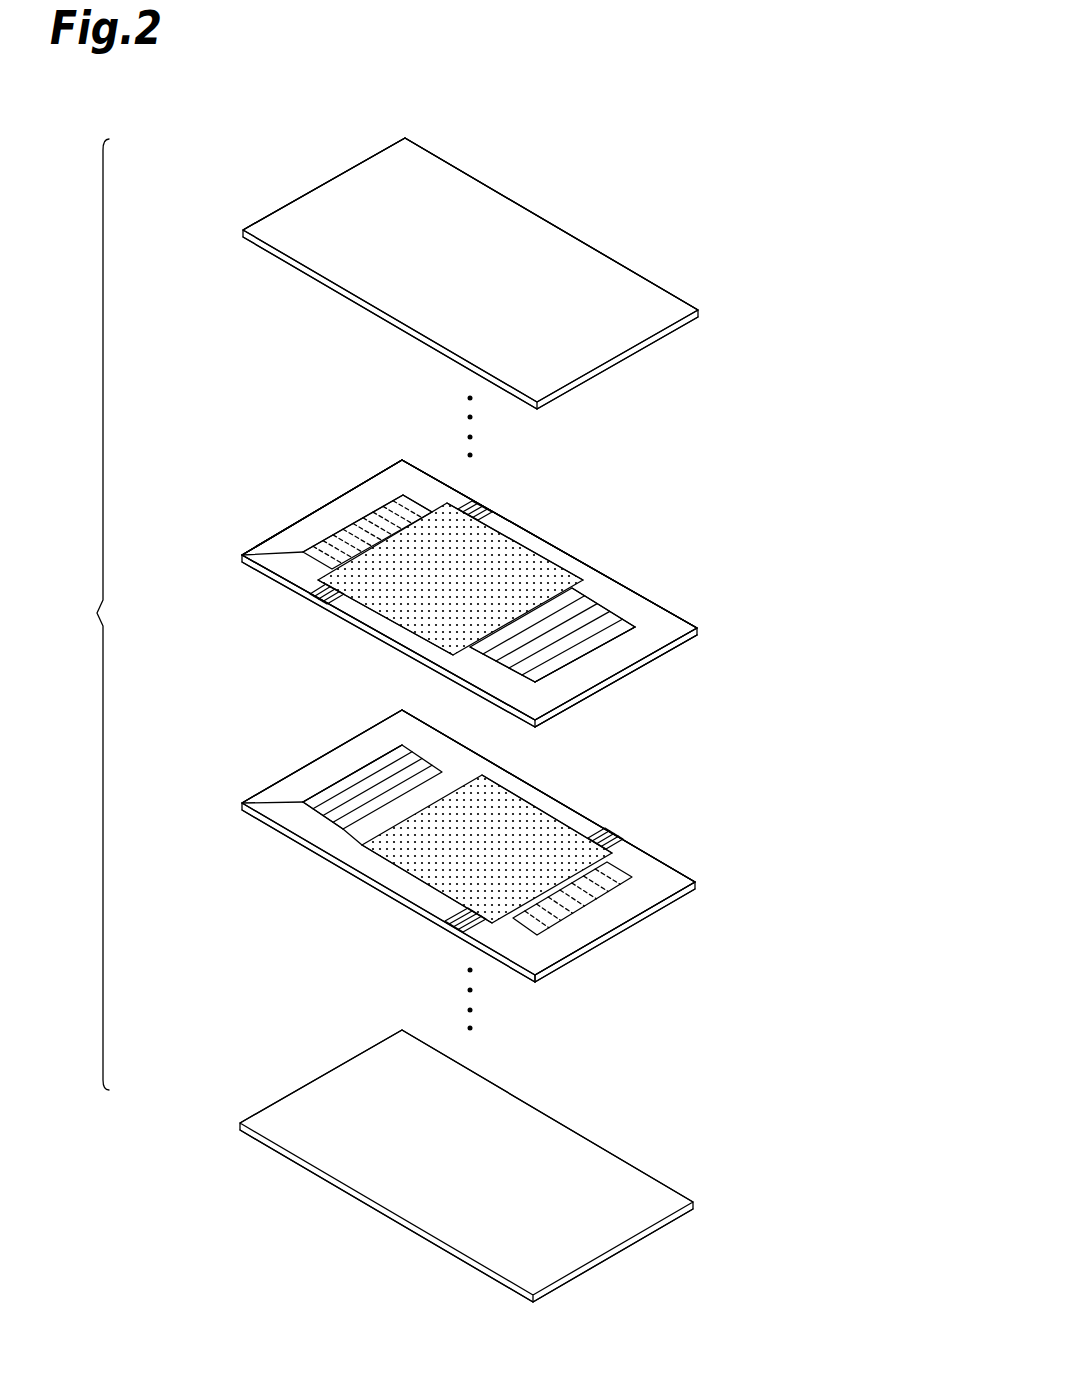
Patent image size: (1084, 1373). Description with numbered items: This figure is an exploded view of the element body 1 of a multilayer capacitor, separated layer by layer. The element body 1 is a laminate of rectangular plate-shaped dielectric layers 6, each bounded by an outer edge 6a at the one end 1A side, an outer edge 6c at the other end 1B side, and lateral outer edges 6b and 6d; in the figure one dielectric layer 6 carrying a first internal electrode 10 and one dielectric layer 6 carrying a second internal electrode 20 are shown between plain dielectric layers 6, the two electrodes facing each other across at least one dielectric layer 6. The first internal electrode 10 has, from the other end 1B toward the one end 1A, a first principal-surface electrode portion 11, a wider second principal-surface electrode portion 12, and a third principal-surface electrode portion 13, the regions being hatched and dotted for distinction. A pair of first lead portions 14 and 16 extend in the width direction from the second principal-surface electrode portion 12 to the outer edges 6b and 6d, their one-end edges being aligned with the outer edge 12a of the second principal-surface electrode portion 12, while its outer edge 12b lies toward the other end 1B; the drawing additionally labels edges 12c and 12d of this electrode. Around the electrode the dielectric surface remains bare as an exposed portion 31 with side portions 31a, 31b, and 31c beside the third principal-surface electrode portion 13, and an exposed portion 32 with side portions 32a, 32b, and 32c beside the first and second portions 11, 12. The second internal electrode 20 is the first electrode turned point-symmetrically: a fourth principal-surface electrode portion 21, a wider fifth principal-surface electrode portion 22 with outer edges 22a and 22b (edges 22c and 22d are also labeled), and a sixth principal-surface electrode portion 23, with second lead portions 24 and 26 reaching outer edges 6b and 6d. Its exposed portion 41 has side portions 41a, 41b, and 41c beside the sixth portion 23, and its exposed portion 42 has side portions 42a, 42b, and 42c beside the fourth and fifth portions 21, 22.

The element body 1 is at (90, 614).
The one end 1A is at (308, 177).
The other end 1B is at (710, 340).
The dielectric layer 6 is at (343, 218).
The outer edge 6a is at (385, 150).
The outer edge 6b is at (343, 297).
The outer edge 6c is at (622, 363).
The outer edge 6d is at (510, 195).
The first internal electrode 10 is at (598, 590).
The first principal-surface electrode portion 11 is at (640, 598).
The second principal-surface electrode portion 12 is at (463, 549).
The outer edge 12a is at (428, 492).
The outer edge 12b is at (593, 622).
The first electrode lower-left edge 12c is at (395, 628).
The first electrode upper-right edge 12d is at (553, 558).
The third principal-surface electrode portion 13 is at (368, 518).
The first lead portion 14 is at (318, 594).
The first lead portion 16 is at (476, 504).
The second internal electrode 20 is at (383, 872).
The fourth principal-surface electrode portion 21 is at (297, 817).
The fifth principal-surface electrode portion 22 is at (467, 847).
The outer edge 22a is at (612, 858).
The outer edge 22b is at (473, 767).
The second electrode left edge 22c is at (420, 900).
The second electrode upper-right edge 22d is at (555, 845).
The sixth principal-surface electrode portion 23 is at (607, 884).
The second lead portion 24 is at (457, 921).
The second lead portion 26 is at (632, 858).
The exposed portion 31 is at (282, 552).
The side portion 31a is at (315, 517).
The side portion 31b is at (298, 568).
The side portion 31c is at (433, 503).
The exposed portion 32 is at (615, 610).
The side portion 32a is at (640, 675).
The side portion 32b is at (503, 685).
The side portion 32c is at (600, 646).
The exposed portion 41 is at (663, 877).
The side portion 41a is at (585, 923).
The side portion 41b is at (525, 985).
The side portion 41c is at (650, 848).
The exposed portion 42 is at (283, 800).
The side portion 42a is at (323, 767).
The side portion 42b is at (357, 810).
The side portion 42c is at (548, 722).